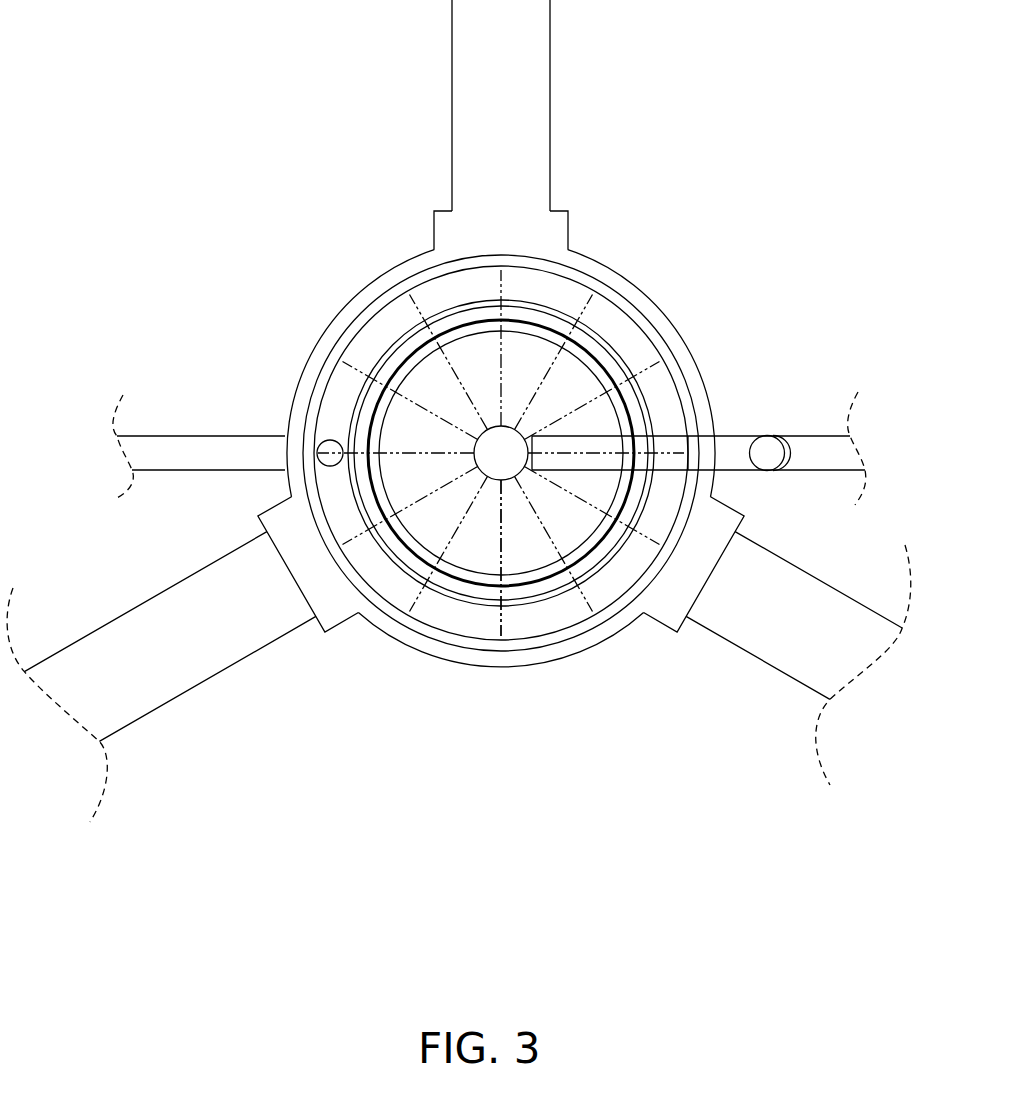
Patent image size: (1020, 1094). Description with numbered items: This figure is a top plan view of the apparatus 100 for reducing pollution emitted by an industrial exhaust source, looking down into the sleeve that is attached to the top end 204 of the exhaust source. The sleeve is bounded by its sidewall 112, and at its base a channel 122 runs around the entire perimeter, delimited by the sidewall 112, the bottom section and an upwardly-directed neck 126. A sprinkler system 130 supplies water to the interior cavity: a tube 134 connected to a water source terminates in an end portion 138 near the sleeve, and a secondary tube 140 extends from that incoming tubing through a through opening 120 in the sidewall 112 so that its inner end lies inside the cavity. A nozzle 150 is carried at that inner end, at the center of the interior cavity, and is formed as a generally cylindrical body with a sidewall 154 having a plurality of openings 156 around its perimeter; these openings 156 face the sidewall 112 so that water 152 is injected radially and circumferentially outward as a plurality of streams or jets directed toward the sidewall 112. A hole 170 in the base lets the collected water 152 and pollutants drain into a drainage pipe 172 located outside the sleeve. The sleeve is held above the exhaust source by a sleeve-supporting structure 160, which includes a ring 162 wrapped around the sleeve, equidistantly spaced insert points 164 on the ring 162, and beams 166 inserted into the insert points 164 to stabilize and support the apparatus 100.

The apparatus 100 is at (205, 40).
The sidewall 112 is at (345, 352).
The through opening 120 is at (710, 436).
The channel 122 is at (357, 343).
The upwardly-directed neck 126 is at (380, 342).
The sprinkler system 130 is at (848, 313).
The tube 134 is at (827, 435).
The end portion 138 is at (769, 436).
The secondary tube 140 is at (733, 442).
The nozzle 150 is at (503, 452).
The water 152 is at (590, 603).
The sidewall 154 is at (518, 555).
The openings 156 is at (482, 552).
The sleeve-supporting structure 160 is at (440, 67).
The ring 162 is at (405, 633).
The insert point 164 is at (447, 227).
The beam 166 is at (452, 22).
The hole 170 is at (323, 441).
The drainage pipe 172 is at (192, 435).
The top end 204 is at (455, 337).